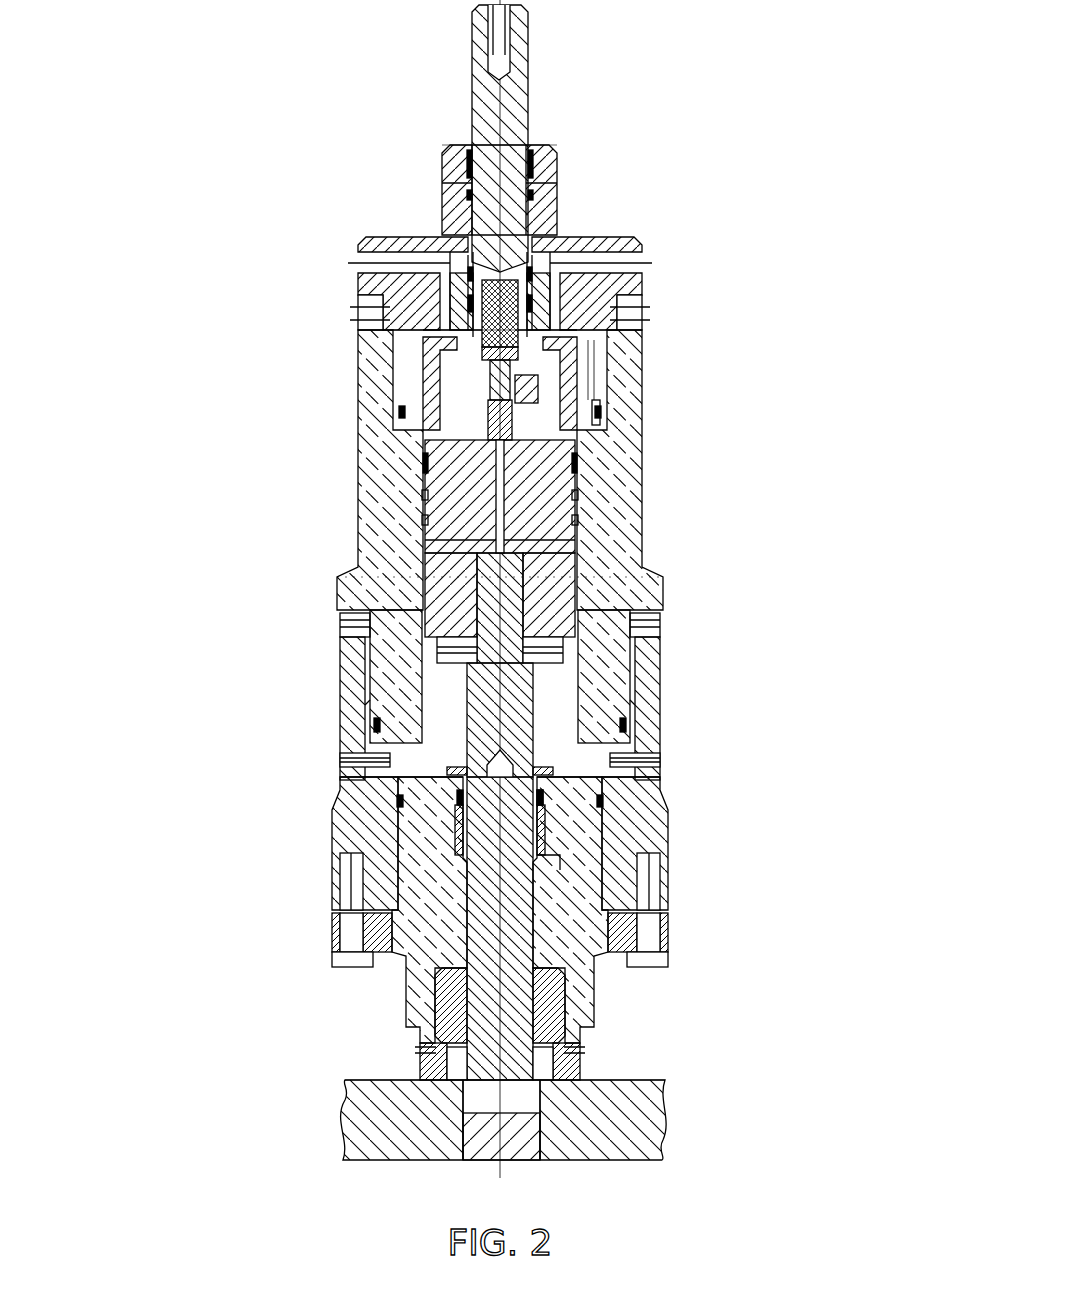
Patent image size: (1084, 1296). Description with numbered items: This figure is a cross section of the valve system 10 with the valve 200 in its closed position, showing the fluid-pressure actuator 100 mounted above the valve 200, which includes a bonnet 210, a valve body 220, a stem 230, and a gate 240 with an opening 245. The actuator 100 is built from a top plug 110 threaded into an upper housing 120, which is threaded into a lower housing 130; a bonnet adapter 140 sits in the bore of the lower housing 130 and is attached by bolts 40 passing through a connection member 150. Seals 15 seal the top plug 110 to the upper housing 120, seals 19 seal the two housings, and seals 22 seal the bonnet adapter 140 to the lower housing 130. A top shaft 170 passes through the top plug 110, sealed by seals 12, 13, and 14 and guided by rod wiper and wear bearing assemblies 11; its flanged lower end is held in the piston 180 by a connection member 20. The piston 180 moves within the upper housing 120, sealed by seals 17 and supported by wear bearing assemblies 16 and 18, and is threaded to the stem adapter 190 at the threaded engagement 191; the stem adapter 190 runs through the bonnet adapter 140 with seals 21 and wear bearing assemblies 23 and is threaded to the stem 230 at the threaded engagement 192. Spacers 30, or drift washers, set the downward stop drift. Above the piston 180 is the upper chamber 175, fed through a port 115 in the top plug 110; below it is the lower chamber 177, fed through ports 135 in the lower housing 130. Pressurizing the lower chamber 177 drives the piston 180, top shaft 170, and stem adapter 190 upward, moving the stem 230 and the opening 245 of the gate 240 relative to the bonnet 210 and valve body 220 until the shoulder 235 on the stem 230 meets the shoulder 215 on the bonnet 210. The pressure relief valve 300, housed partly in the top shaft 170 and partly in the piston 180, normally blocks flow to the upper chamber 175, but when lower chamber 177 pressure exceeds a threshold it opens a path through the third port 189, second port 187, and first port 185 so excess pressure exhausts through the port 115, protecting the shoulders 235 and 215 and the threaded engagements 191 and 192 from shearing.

The valve system 10 is at (658, 98).
The assemblies 11 is at (468, 172).
The seal 12 is at (530, 192).
The seal 13 is at (530, 275).
The seal 14 is at (405, 302).
The seals 15 is at (398, 411).
The assembly 16 is at (580, 468).
The seals 17 is at (583, 522).
The assembly 18 is at (477, 587).
The seals 19 is at (622, 718).
The connection member 20 is at (450, 340).
The seals 21 is at (565, 800).
The seals 22 is at (455, 800).
The assemblies 23 is at (458, 830).
The spacers 30 is at (445, 770).
The bolts 40 is at (343, 957).
The actuator 100 is at (683, 357).
The top plug 110 is at (556, 172).
The port 115 is at (640, 262).
The upper housing 120 is at (620, 445).
The lower housing 130 is at (648, 668).
The ports 135 is at (600, 777).
The bonnet adapter 140 is at (598, 858).
The connection member 150 is at (658, 930).
The top shaft 170 is at (485, 218).
The upper chamber 175 is at (610, 325).
The lower chamber 177 is at (600, 755).
The piston 180 is at (600, 412).
The first port 185 is at (597, 384).
The second port 187 is at (427, 520).
The third port 189 is at (605, 567).
The stem adapter 190 is at (470, 703).
The threaded engagement 191 is at (360, 624).
The threaded engagement 192 is at (398, 800).
The valve 200 is at (695, 1090).
The bonnet 210 is at (560, 1010).
The shoulder 215 is at (428, 1060).
The valve body 220 is at (625, 1138).
The stem 230 is at (440, 1010).
The shoulder 235 is at (475, 1100).
The gate 240 is at (530, 1140).
The opening 245 is at (520, 1100).
The pressure relief valve 300 is at (423, 455).